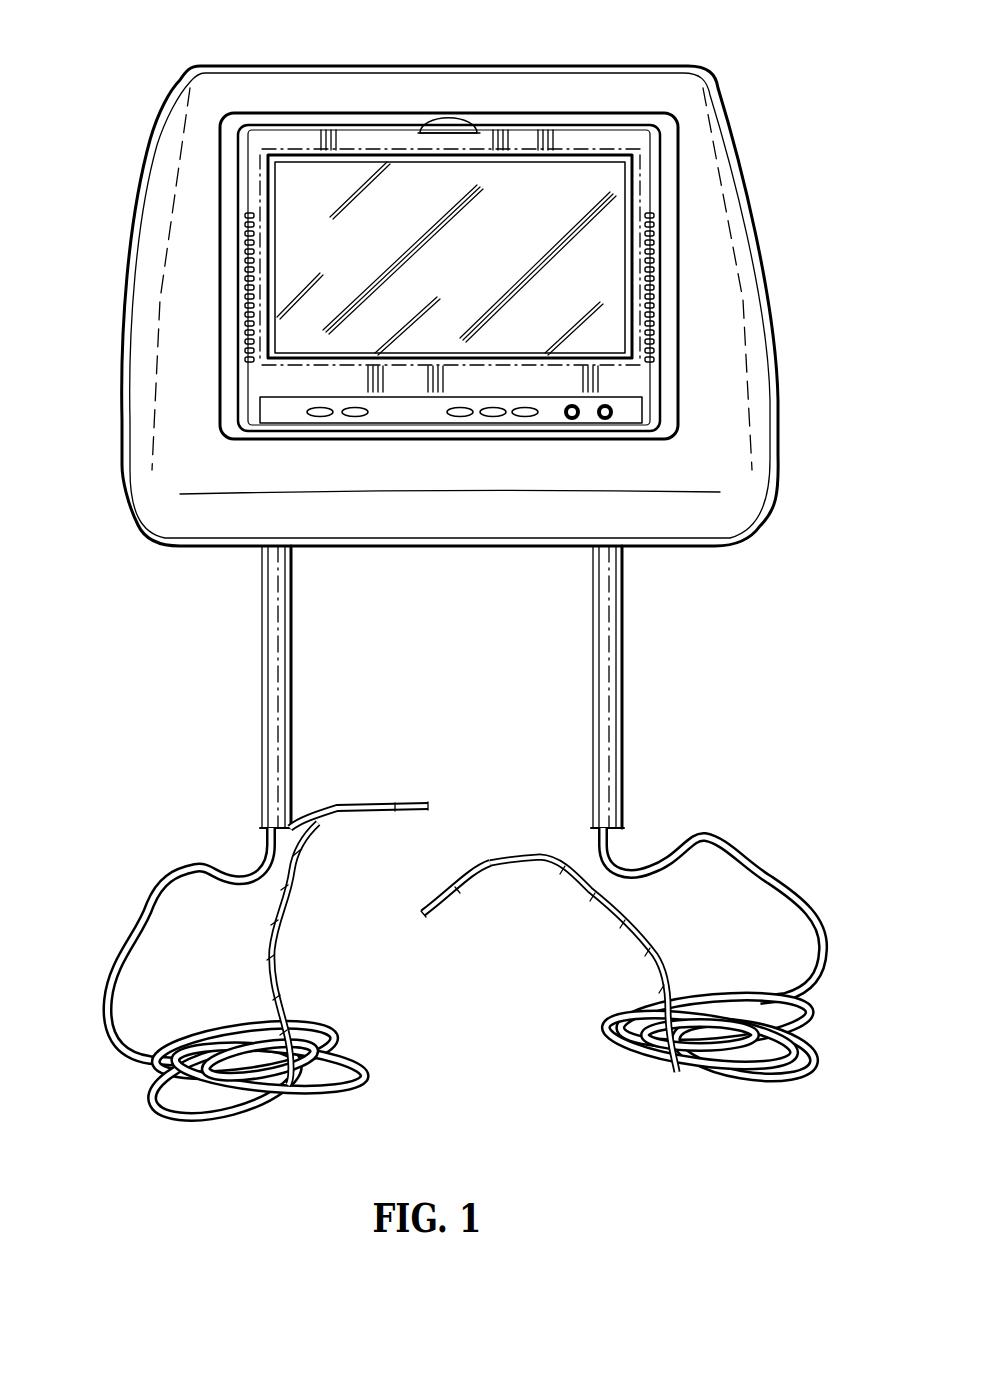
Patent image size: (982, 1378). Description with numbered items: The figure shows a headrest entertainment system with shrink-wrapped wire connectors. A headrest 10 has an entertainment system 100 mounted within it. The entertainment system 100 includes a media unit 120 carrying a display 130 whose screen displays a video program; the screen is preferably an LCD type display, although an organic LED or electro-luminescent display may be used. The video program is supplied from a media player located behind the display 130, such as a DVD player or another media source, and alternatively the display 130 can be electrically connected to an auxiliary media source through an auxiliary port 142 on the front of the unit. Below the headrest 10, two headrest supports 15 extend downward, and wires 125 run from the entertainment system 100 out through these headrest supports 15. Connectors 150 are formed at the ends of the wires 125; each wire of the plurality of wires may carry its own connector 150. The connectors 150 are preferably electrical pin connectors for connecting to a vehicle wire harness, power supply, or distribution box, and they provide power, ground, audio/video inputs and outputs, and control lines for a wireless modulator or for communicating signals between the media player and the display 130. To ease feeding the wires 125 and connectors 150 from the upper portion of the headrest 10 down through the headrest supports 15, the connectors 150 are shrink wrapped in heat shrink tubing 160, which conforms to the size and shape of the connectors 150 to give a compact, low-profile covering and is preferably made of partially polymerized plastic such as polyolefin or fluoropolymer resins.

The headrest 10 is at (225, 88).
The headrest supports 15 is at (627, 603).
The entertainment system 100 is at (632, 137).
The media unit 120 is at (582, 137).
The display 130 is at (607, 220).
The auxiliary port 142 is at (610, 413).
The wires 125 is at (150, 907).
The connectors 150 is at (315, 827).
The heat shrink tubing 160 is at (460, 885).